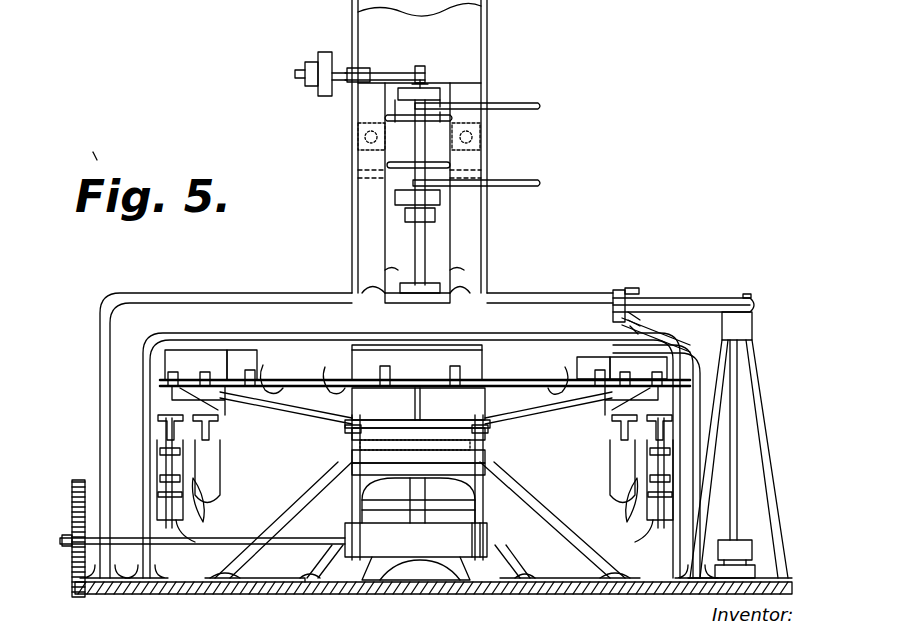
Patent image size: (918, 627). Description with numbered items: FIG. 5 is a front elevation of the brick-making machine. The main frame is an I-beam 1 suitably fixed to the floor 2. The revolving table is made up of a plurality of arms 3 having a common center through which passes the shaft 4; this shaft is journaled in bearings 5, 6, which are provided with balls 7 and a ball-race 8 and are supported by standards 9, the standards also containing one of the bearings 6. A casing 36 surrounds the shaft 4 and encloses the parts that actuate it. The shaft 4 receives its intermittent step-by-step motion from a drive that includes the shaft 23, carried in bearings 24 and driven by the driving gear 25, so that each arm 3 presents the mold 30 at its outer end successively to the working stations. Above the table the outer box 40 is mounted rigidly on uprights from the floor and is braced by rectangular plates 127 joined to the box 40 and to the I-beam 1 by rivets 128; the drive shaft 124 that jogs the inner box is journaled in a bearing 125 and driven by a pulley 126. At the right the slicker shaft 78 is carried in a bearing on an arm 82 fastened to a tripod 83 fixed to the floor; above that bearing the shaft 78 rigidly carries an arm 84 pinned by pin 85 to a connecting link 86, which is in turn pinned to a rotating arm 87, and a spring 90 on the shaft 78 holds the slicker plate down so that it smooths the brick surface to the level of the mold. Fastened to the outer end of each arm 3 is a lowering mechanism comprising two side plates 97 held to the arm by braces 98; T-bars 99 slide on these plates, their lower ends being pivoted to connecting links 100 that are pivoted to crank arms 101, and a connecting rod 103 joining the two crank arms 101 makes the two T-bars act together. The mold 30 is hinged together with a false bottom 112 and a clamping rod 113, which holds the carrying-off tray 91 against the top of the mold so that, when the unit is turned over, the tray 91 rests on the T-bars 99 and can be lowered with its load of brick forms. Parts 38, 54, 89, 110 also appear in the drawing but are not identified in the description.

The I-beam 1 is at (558, 330).
The floor 2 is at (200, 594).
The arms 3 is at (416, 406).
The shaft 4 is at (395, 512).
The bearing 5 is at (405, 565).
The bearing 6 is at (399, 435).
The balls 7 is at (387, 440).
The ball-race 8 is at (445, 440).
The standards 9 is at (420, 520).
The shaft 23 is at (232, 545).
The bearings 24 is at (310, 582).
The driving gear 25 is at (80, 582).
The mold 30 is at (416, 362).
The casing 36 is at (454, 540).
The column 38 is at (419, 146).
The outer box 40 is at (497, 158).
The collar 54 is at (426, 90).
The shaft 78 is at (613, 318).
The arm 82 is at (690, 322).
The tripod 83 is at (750, 375).
The arm 84 is at (615, 295).
The pin 85 is at (636, 290).
The connecting link 86 is at (680, 298).
The arm 87 is at (750, 300).
The block 89 is at (748, 548).
The spring 90 is at (630, 322).
The carrying-off tray 91 is at (468, 348).
The side plates 97 is at (158, 458).
The braces 98 is at (175, 410).
The T-bars 99 is at (220, 432).
The connecting links 100 is at (205, 528).
The crank arm 101 is at (218, 483).
The connecting rod 103 is at (208, 512).
The hook 110 is at (418, 367).
The false bottom 112 is at (245, 355).
The clamping rod 113 is at (160, 378).
The drive shaft 124 is at (383, 72).
The bearing 125 is at (345, 88).
The pulley 126 is at (322, 60).
The rectangular plates 127 is at (489, 216).
The rivets 128 is at (358, 288).